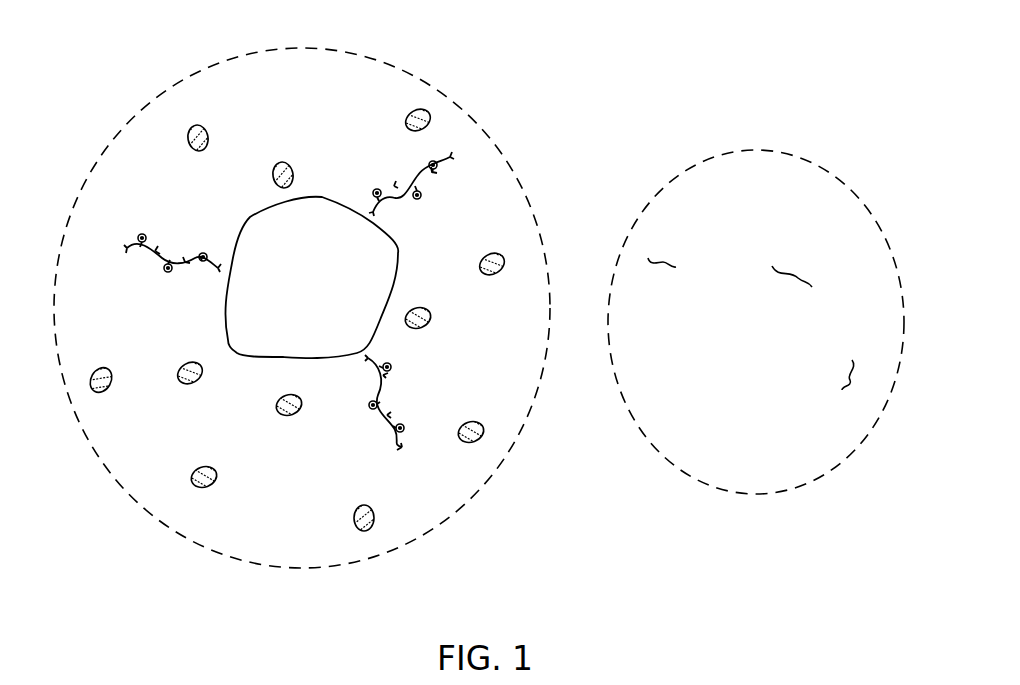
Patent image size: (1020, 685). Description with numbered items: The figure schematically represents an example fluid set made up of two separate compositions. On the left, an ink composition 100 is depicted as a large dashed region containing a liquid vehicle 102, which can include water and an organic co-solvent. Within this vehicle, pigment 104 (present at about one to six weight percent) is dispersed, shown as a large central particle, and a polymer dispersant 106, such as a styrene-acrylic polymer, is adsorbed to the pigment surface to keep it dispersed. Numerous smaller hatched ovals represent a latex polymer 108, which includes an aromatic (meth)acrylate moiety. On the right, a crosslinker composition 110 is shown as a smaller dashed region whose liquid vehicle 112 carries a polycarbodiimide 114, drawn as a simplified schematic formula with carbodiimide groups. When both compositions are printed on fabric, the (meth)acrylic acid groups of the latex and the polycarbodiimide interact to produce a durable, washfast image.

The ink composition 100 is at (136, 86).
The liquid vehicle 102 is at (280, 108).
The pigment 104 is at (333, 297).
The polymer dispersant 106 is at (123, 236).
The latex polymer 108 is at (96, 390).
The crosslinker composition 110 is at (828, 150).
The liquid vehicle 112 is at (795, 221).
The polycarbodiimide 114 is at (756, 289).